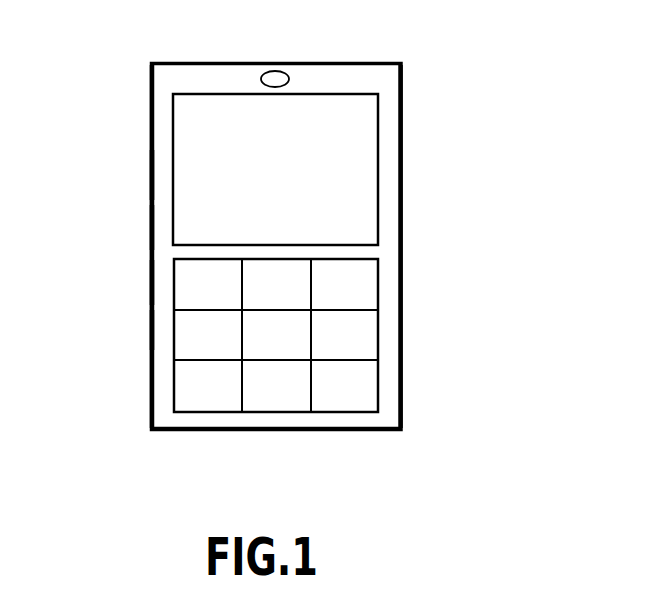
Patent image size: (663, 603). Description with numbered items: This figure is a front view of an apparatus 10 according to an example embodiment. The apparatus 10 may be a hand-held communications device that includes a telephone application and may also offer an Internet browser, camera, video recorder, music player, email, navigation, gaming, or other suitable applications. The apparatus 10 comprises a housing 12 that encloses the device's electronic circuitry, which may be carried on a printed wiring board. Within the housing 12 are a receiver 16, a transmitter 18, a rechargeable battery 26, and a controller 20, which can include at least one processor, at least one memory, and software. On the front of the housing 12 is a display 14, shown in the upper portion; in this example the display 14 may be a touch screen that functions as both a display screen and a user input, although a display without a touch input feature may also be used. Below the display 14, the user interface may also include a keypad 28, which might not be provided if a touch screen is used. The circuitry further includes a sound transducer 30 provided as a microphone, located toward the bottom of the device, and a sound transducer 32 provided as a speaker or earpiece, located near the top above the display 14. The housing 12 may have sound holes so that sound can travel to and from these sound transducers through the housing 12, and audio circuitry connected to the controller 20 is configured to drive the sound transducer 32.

The apparatus 10 is at (463, 67).
The housing 12 is at (152, 120).
The display 14 is at (360, 183).
The receiver 16 is at (152, 177).
The transmitter 18 is at (152, 230).
The controller 20 is at (152, 285).
The rechargeable battery 26 is at (152, 330).
The keypad 28 is at (360, 340).
The sound transducer 30 is at (200, 455).
The sound transducer 32 is at (284, 71).